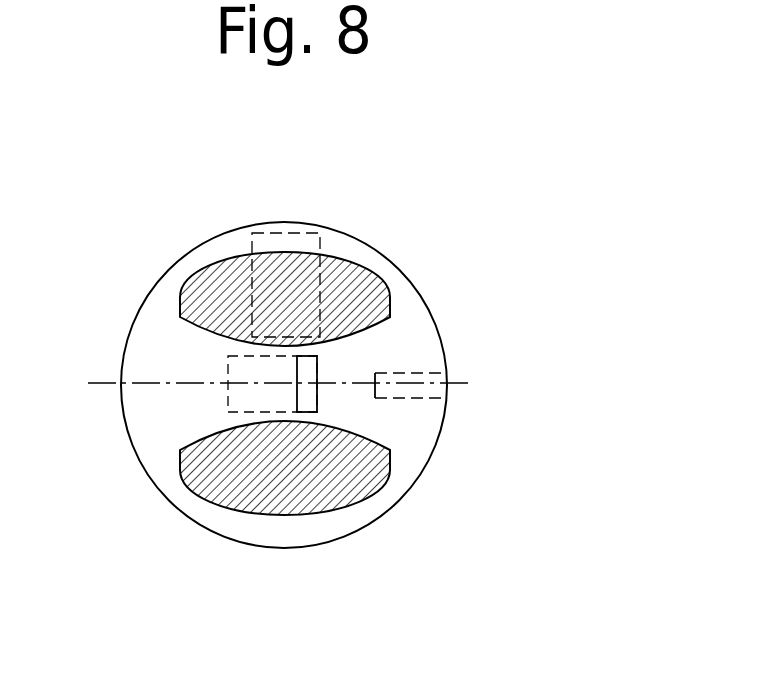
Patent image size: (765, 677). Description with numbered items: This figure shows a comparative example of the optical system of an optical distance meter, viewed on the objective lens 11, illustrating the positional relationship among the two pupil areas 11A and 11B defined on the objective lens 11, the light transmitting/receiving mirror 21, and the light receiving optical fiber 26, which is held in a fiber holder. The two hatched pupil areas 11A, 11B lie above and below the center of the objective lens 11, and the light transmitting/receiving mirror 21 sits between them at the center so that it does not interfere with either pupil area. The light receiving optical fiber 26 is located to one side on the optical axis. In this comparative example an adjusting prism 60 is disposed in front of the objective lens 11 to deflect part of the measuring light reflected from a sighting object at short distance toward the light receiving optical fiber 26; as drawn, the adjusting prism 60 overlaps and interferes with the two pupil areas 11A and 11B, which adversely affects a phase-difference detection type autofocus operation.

The objective lens 11 is at (410, 341).
The pupil area 11A is at (197, 303).
The pupil area 11B is at (210, 487).
The light transmitting/receiving mirror 21 is at (240, 401).
The adjusting prism 60 is at (270, 222).
The light receiving optical fiber 26 is at (420, 405).